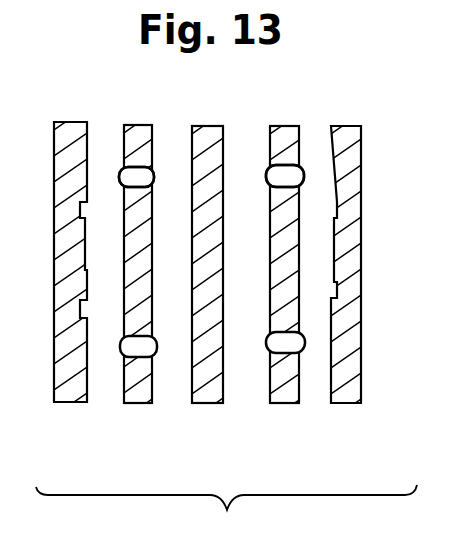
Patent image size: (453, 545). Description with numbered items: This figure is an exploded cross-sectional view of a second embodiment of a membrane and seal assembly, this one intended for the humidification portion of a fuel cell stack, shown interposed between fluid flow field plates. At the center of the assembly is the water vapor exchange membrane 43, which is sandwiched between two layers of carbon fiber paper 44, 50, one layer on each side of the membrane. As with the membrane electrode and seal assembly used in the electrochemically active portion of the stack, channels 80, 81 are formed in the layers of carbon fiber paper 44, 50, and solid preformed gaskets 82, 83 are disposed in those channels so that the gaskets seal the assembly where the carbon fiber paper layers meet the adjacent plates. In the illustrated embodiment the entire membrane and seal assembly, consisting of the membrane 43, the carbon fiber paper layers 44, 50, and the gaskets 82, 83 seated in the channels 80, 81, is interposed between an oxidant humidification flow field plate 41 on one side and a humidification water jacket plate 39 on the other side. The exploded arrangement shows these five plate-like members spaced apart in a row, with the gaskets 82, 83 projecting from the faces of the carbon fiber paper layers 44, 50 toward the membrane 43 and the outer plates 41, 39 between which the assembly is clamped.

The humidification water jacket plate 39 is at (357, 404).
The oxidant humidification flow field plate 41 is at (73, 403).
The water vapor exchange membrane 43 is at (212, 403).
The carbon fiber paper layer 44 is at (136, 403).
The carbon fiber paper layer 50 is at (289, 403).
The channel 80 is at (127, 168).
The channel 81 is at (302, 170).
The solid preformed gasket 82 is at (155, 170).
The solid preformed gasket 83 is at (266, 168).